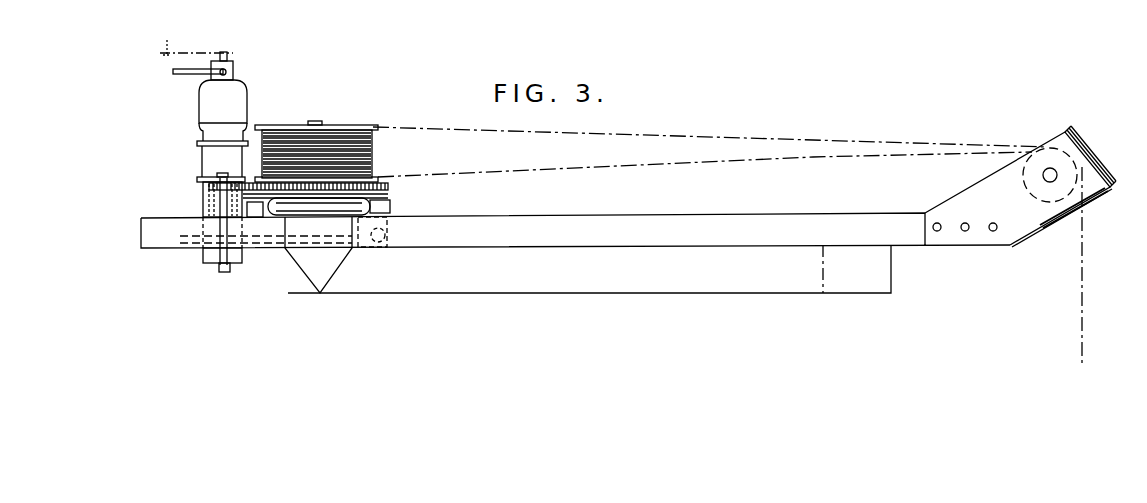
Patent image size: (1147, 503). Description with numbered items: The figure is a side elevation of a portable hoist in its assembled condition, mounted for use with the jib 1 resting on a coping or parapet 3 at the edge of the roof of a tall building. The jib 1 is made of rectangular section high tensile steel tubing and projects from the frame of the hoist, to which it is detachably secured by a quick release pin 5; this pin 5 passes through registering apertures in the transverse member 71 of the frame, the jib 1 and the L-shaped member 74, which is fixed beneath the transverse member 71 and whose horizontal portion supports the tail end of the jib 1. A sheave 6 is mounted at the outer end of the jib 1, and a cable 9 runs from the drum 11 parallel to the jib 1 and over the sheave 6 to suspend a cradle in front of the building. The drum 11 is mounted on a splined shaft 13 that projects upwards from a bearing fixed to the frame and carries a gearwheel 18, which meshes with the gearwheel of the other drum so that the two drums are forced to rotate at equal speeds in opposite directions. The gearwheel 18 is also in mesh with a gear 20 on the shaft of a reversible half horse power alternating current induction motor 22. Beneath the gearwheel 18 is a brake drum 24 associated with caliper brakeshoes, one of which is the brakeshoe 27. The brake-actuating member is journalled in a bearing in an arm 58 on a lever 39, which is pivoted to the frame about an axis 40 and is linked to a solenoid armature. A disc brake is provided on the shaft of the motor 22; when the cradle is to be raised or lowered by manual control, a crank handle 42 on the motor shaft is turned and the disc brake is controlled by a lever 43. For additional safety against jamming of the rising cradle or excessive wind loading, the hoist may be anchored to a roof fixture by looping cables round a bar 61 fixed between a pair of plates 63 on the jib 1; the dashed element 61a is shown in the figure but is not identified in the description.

The jib 1 is at (578, 236).
The coping or parapet 3 is at (880, 277).
The quick release pin 5 is at (223, 264).
The sheave 6 is at (1080, 137).
The cable 9 is at (762, 155).
The drum 11 is at (362, 125).
The splined shaft 13 is at (313, 121).
The gearwheel 18 is at (388, 187).
The gear 20 is at (205, 185).
The induction motor 22 is at (207, 108).
The brake drum 24 is at (358, 214).
The caliper brakeshoe 27 is at (449, 157).
The lever 39 is at (262, 250).
The axis 40 is at (388, 243).
The crank handle 42 is at (190, 51).
The lever 43 is at (175, 73).
The arm 58 is at (388, 213).
The bar 61 is at (327, 297).
The push rod 61a is at (178, 243).
The plate 63 is at (317, 270).
The transverse member 71 is at (205, 205).
The L-shaped member 74 is at (210, 264).